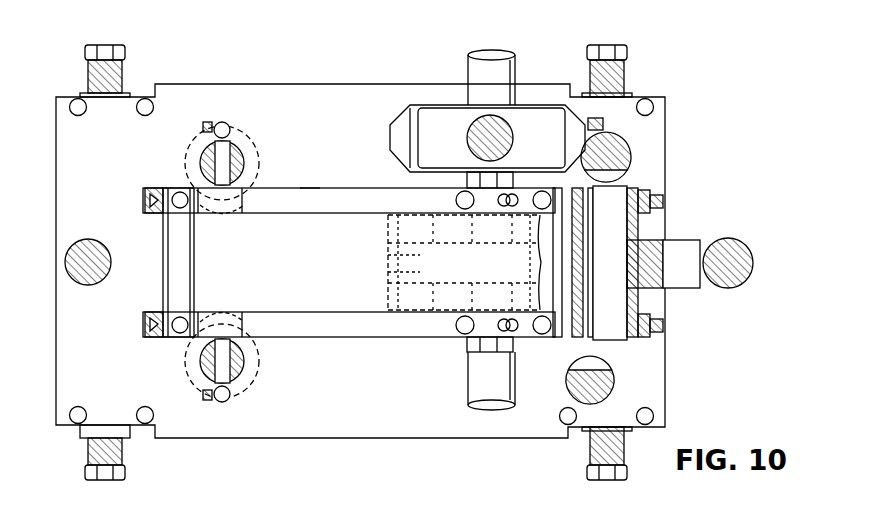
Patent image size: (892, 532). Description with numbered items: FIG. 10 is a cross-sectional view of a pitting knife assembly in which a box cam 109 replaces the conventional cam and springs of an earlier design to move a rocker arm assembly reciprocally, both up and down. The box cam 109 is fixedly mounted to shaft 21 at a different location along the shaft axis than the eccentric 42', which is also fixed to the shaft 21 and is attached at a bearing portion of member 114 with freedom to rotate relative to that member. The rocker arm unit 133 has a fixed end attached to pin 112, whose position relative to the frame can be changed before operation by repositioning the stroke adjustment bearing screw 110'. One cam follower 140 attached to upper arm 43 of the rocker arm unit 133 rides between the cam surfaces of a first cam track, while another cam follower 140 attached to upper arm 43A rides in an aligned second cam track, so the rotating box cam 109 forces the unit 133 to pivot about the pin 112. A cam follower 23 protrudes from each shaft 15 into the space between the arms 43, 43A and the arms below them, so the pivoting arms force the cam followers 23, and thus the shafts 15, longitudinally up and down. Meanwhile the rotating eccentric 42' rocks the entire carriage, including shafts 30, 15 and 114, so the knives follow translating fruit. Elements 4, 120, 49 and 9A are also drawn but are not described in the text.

The bolt 4 is at (88, 72).
The shaft 30 is at (68, 280).
The clamp block 120 is at (152, 185).
The frame 49 is at (182, 270).
The upper arm 43A is at (283, 203).
The upper arm 43 is at (322, 325).
The cam follower 23 is at (230, 205).
The shaft 15 is at (205, 152).
The rocker arm unit 133 is at (310, 178).
The eccentric 42' is at (475, 117).
The member 114 is at (490, 125).
The shaft 21 is at (500, 58).
The box cam 109 is at (450, 298).
The heater block 9A is at (388, 228).
The cam follower 140 is at (472, 297).
The pin 112 is at (615, 195).
The stroke adjustment bearing screw 110' is at (690, 282).